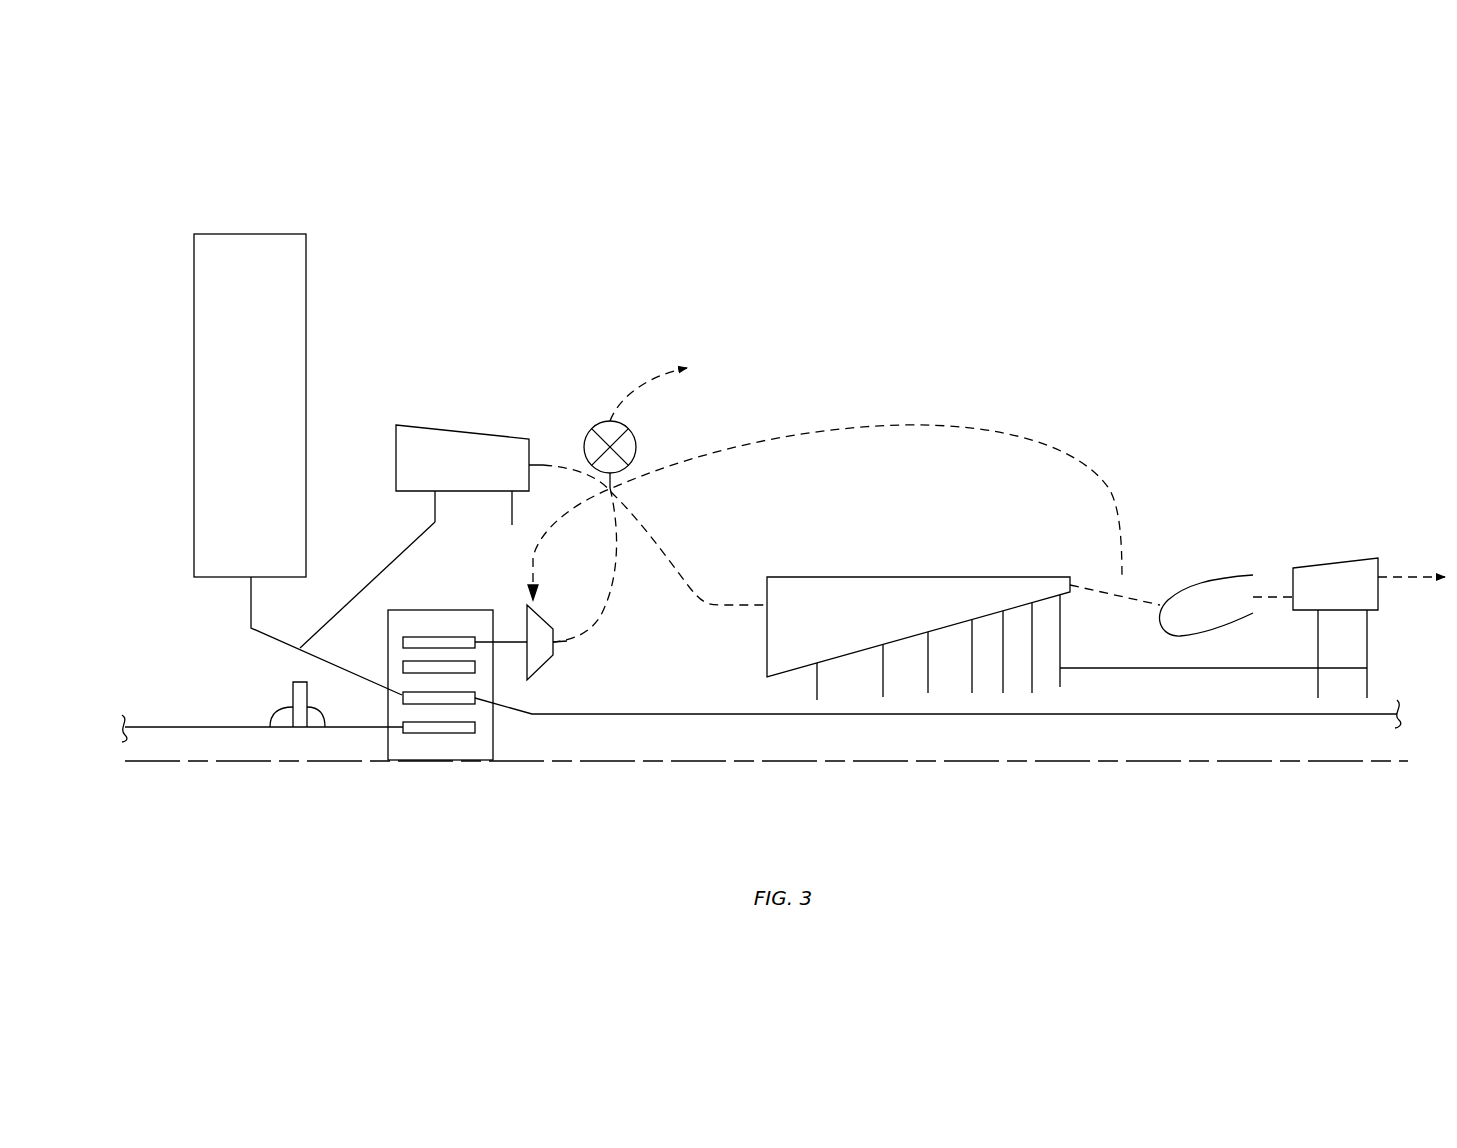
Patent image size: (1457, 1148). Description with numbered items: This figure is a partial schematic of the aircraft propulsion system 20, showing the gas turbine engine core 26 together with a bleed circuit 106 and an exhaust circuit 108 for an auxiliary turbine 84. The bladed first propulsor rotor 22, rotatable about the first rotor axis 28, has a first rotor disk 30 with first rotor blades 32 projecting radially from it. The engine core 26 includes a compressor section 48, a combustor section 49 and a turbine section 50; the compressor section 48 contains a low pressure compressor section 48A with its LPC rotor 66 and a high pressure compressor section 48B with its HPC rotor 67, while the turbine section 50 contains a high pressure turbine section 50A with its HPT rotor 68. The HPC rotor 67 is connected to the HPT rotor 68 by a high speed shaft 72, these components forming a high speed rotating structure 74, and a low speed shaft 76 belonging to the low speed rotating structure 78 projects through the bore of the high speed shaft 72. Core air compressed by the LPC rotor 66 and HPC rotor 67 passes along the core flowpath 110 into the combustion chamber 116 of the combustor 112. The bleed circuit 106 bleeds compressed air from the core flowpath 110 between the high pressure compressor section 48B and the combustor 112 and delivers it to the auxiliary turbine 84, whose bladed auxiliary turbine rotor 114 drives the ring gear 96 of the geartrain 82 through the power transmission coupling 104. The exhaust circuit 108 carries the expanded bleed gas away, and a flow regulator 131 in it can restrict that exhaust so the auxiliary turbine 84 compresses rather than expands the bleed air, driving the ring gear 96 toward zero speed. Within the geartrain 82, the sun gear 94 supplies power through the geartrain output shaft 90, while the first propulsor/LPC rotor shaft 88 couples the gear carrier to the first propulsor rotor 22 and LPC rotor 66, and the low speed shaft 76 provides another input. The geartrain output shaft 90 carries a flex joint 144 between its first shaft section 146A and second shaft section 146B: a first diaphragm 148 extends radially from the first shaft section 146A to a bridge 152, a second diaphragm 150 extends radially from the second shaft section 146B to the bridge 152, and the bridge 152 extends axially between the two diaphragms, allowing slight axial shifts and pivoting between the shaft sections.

The propulsion system 20 is at (337, 178).
The first propulsor rotor 22 is at (176, 508).
The gas turbine engine core 26 is at (1022, 790).
The first rotor axis 28 is at (1402, 762).
The first rotor disk 30 is at (250, 603).
The first rotor blades 32 is at (194, 376).
The compressor section 48 is at (790, 340).
The low pressure compressor section 48A is at (468, 405).
The high pressure compressor section 48B is at (897, 563).
The combustor section 49 is at (1225, 552).
The turbine section 50 is at (1350, 430).
The high pressure turbine section 50A is at (1338, 543).
The LPC rotor 66 is at (412, 492).
The HPC rotor 67 is at (767, 632).
The HPT rotor 68 is at (1378, 594).
The high speed shaft 72 is at (1225, 668).
The high speed rotating structure 74 is at (1113, 690).
The low speed shaft 76 is at (1128, 714).
The low speed rotating structure 78 is at (1200, 725).
The geartrain 82 is at (408, 768).
The auxiliary turbine 84 is at (552, 674).
The first propulsor/LPC rotor shaft 88 is at (348, 668).
The geartrain output shaft 90 is at (173, 732).
The sun gear 94 is at (440, 735).
The ring gear 96 is at (440, 658).
The power transmission coupling 104 is at (512, 642).
The bleed circuit 106 is at (907, 425).
The exhaust circuit 108 is at (620, 402).
The core flowpath 110 is at (670, 557).
The combustor 112 is at (1190, 583).
The auxiliary turbine rotor 114 is at (543, 622).
The combustion chamber 116 is at (1220, 615).
The flow regulator 131 is at (638, 447).
The flex joint 144 is at (267, 703).
The first shaft section 146A is at (200, 732).
The second shaft section 146B is at (357, 732).
The first diaphragm 148 is at (270, 728).
The second diaphragm 150 is at (325, 727).
The bridge 152 is at (300, 680).